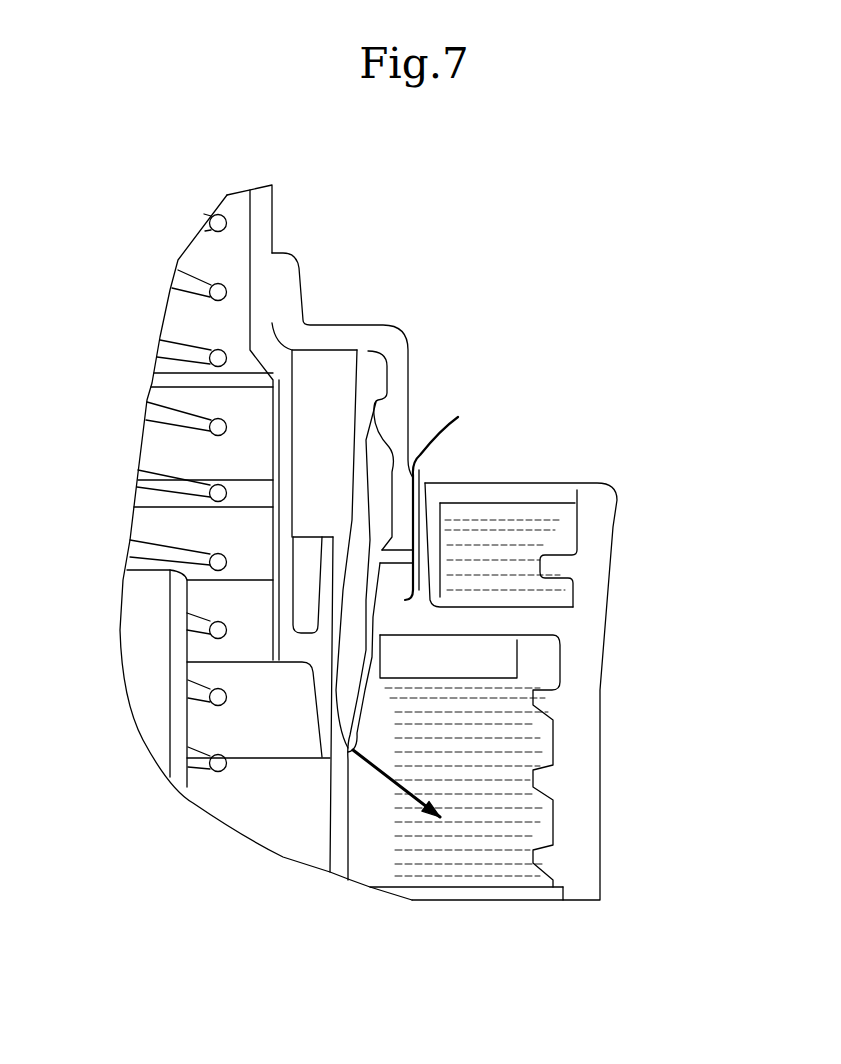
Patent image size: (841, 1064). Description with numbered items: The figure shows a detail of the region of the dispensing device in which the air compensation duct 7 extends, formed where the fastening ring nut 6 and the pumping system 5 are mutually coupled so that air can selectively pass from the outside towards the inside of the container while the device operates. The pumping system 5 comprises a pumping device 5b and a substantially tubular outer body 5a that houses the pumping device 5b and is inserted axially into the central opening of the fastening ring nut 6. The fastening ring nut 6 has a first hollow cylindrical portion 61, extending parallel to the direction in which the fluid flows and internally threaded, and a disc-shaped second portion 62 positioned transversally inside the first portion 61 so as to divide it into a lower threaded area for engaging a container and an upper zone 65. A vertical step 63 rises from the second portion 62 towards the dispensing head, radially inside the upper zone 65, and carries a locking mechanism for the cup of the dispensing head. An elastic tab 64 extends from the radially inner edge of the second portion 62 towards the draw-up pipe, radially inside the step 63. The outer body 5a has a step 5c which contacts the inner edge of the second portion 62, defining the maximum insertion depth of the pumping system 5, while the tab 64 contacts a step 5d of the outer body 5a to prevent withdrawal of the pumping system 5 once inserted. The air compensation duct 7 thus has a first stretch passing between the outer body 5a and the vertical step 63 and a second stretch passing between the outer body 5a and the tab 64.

The pumping system 5 is at (310, 258).
The outer body 5a is at (341, 856).
The pumping device 5b is at (155, 440).
The step 5c is at (373, 473).
The step 5d is at (352, 768).
The fastening ring nut 6 is at (520, 722).
The first hollow cylindrical portion 61 is at (575, 830).
The second portion 62 is at (488, 627).
The vertical step 63 is at (428, 515).
The elastic tab 64 is at (368, 715).
The upper zone 65 is at (597, 553).
The air compensation duct 7 is at (452, 420).